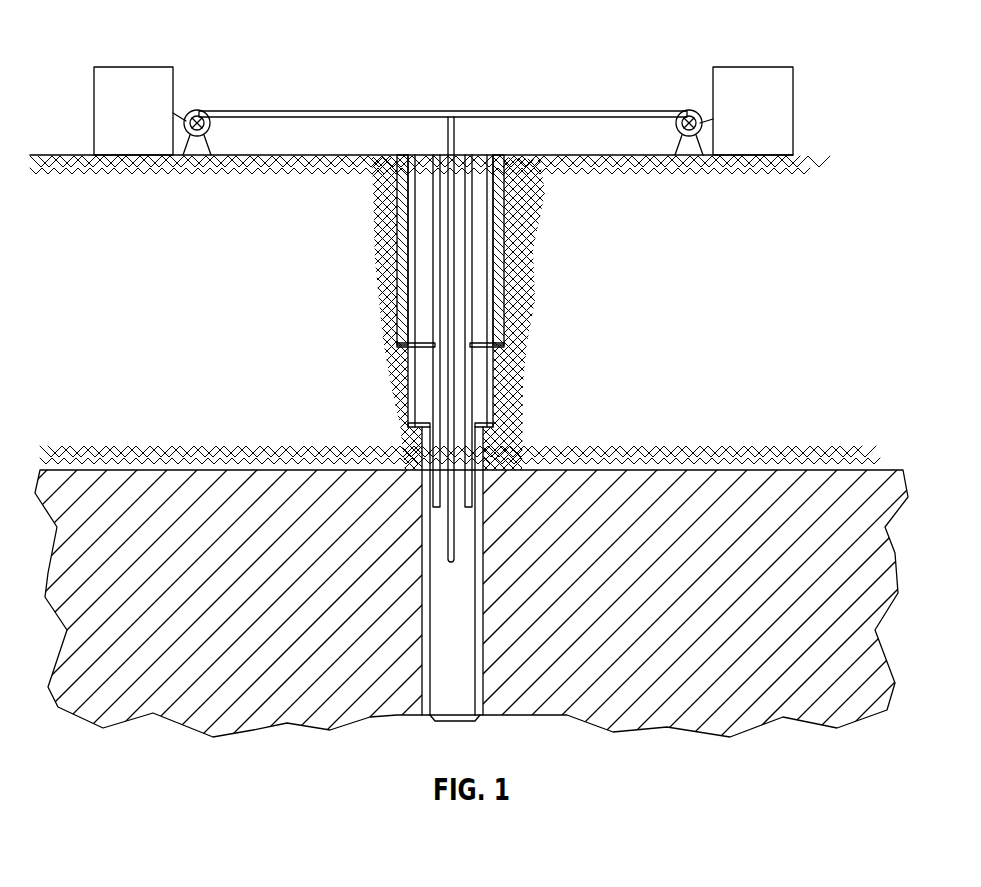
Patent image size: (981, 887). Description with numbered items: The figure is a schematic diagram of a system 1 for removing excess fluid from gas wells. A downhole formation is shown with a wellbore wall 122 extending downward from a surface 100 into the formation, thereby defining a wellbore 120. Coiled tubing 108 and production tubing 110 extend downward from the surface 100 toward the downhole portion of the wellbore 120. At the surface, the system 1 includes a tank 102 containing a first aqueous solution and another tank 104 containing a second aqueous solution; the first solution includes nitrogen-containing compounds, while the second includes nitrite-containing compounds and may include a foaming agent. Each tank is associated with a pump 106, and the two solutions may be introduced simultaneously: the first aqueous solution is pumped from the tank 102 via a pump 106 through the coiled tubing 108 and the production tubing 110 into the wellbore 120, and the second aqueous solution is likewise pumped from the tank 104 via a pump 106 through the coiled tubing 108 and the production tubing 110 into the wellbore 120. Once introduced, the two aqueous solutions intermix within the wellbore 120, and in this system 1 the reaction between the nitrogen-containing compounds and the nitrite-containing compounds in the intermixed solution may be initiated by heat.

The system 1 is at (170, 30).
The surface 100 is at (42, 155).
The tank 102 is at (155, 124).
The tank 104 is at (774, 124).
The pump 106 is at (200, 111).
The coiled tubing 108 is at (617, 112).
The production tubing 110 is at (470, 260).
The wellbore 120 is at (474, 697).
The wellbore wall 122 is at (500, 400).